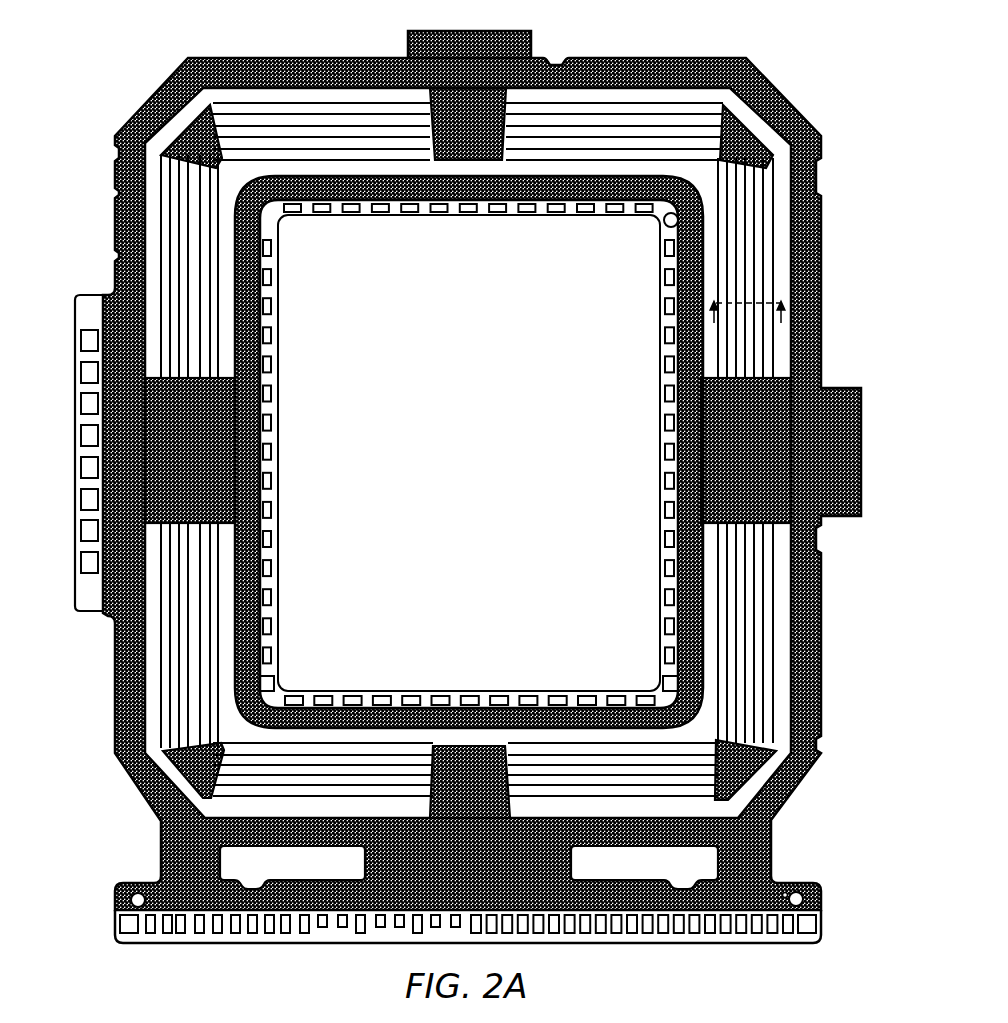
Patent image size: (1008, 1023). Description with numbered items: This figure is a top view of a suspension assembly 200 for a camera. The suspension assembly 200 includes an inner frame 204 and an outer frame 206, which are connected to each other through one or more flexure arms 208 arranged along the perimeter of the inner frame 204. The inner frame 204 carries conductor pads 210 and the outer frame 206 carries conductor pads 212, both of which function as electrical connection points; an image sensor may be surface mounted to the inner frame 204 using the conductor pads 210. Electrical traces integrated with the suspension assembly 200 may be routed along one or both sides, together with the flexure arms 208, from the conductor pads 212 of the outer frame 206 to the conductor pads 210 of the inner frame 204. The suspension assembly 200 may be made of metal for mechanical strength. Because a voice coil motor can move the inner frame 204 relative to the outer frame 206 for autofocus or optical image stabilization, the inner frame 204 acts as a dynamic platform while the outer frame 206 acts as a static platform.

The suspension assembly 200 is at (830, 70).
The inner frame 204 is at (270, 400).
The outer frame 206 is at (107, 140).
The flexure arms 208 is at (770, 555).
The conductor pads 210 is at (267, 302).
The conductor pads 212 is at (73, 334).